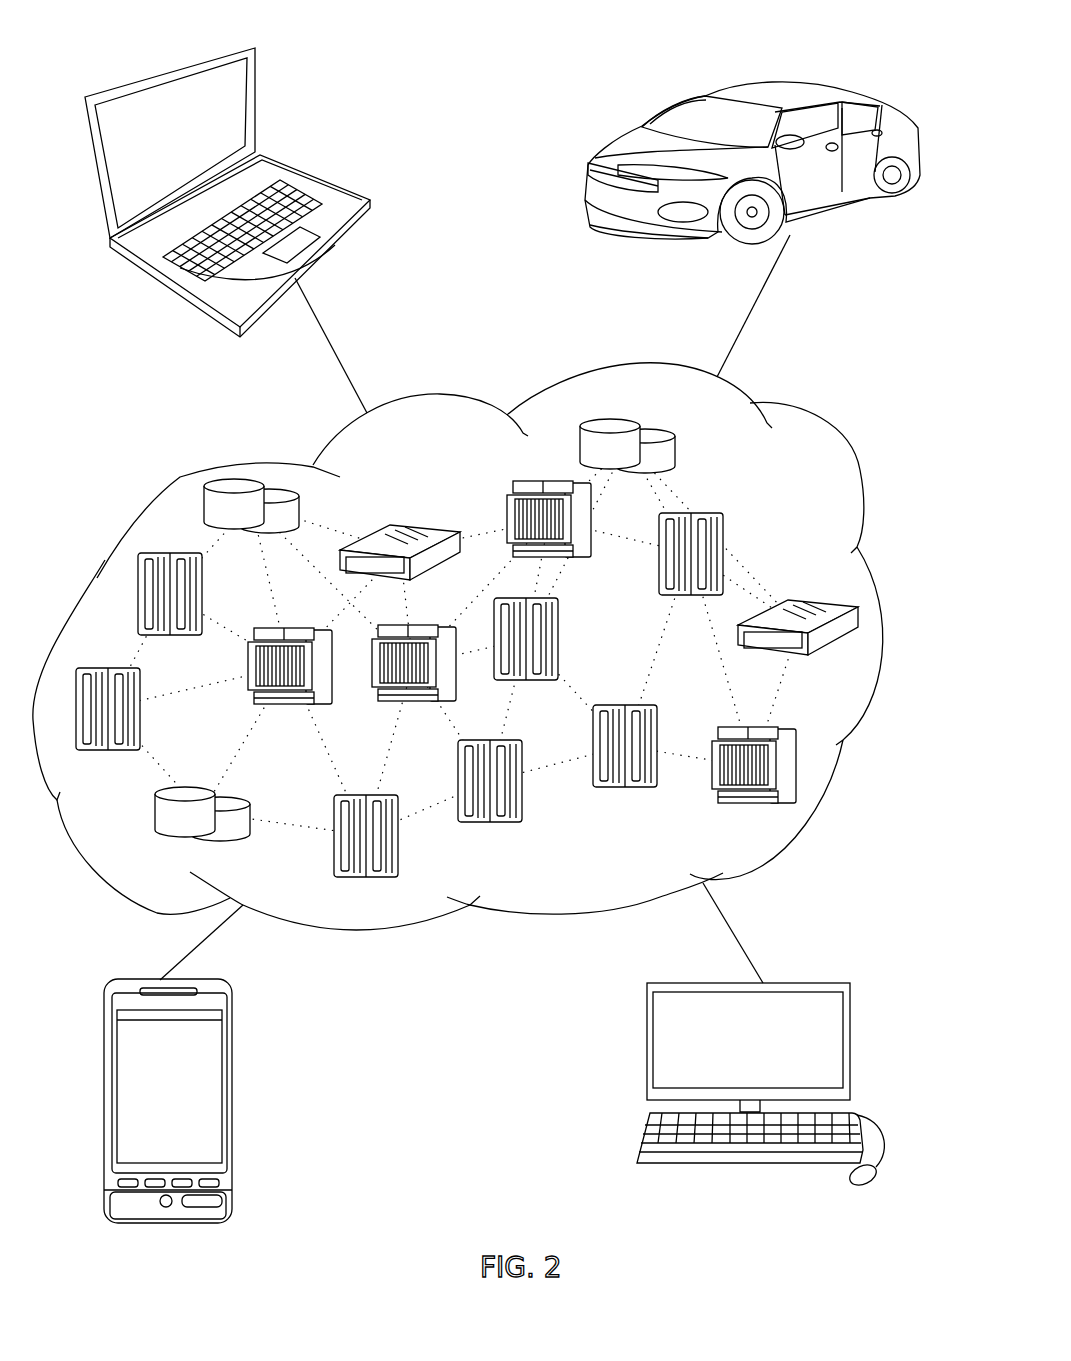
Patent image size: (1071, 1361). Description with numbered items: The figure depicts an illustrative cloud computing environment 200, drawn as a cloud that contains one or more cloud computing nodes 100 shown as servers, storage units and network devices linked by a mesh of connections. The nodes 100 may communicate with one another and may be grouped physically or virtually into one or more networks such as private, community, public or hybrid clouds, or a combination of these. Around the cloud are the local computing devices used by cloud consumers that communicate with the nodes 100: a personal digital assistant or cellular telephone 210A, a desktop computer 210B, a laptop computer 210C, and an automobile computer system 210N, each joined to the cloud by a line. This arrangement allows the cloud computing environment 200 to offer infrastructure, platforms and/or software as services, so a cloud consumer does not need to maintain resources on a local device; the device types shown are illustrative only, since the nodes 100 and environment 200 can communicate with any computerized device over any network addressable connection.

The cloud computing node 100 is at (828, 578).
The cloud computing environment 200 is at (465, 646).
The personal digital assistant (PDA) or cellular telephone 210A is at (270, 982).
The desktop computer 210B is at (850, 1003).
The laptop computer 210C is at (365, 164).
The automobile computer system 210N is at (867, 97).